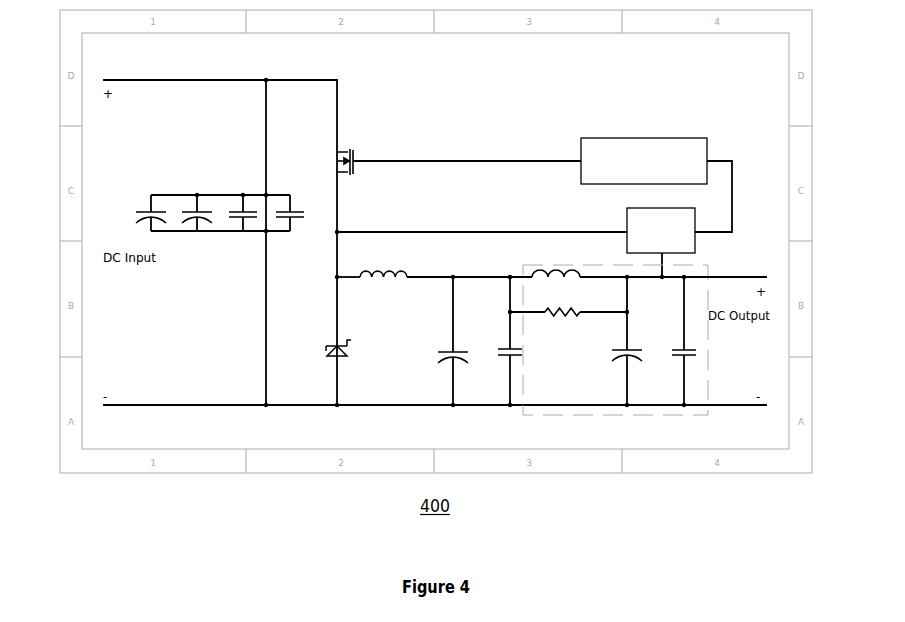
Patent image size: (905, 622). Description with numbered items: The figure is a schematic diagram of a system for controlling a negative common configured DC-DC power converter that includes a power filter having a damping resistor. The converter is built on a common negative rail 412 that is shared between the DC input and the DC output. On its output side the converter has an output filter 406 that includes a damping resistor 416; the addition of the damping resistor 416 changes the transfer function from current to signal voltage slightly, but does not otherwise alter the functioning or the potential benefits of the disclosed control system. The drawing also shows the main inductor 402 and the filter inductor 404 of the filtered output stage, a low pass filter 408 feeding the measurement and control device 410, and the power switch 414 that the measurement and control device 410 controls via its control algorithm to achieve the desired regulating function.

The main inductor 402 is at (386, 305).
The filter inductor 404 is at (547, 270).
The output filter 406 is at (632, 341).
The low pass filter (LPF) 408 is at (697, 240).
The measurement and control device 410 is at (651, 138).
The common negative rail 412 is at (738, 405).
The switching transistor 414 is at (355, 152).
The damping resistor 416 is at (576, 315).